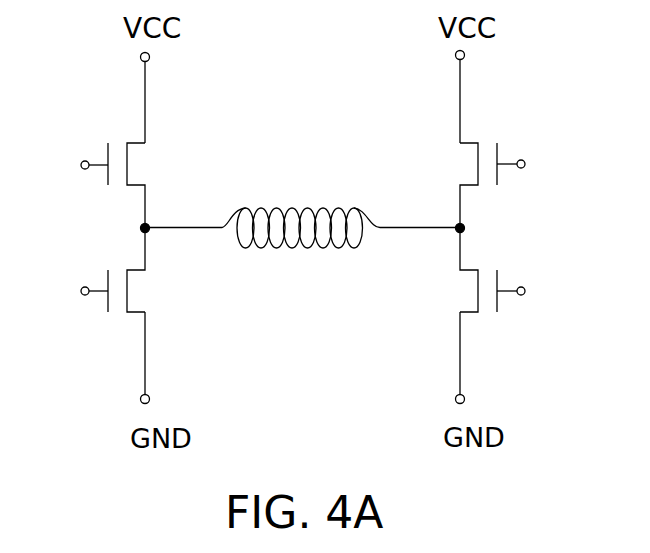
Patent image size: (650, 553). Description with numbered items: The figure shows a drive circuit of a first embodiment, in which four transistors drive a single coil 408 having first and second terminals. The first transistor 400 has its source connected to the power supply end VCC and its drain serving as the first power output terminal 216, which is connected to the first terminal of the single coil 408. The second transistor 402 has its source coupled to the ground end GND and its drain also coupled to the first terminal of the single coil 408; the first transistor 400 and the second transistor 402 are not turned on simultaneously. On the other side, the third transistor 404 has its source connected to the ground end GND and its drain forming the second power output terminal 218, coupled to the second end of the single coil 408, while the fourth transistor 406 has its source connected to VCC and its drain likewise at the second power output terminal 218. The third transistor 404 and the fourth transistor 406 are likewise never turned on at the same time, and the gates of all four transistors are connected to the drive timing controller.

The first transistor 400 is at (113, 138).
The second transistor 402 is at (116, 268).
The third transistor 404 is at (486, 270).
The fourth transistor 406 is at (488, 143).
The first power output terminal 216 is at (147, 225).
The second power output terminal 218 is at (458, 226).
The single coil 408 is at (305, 246).